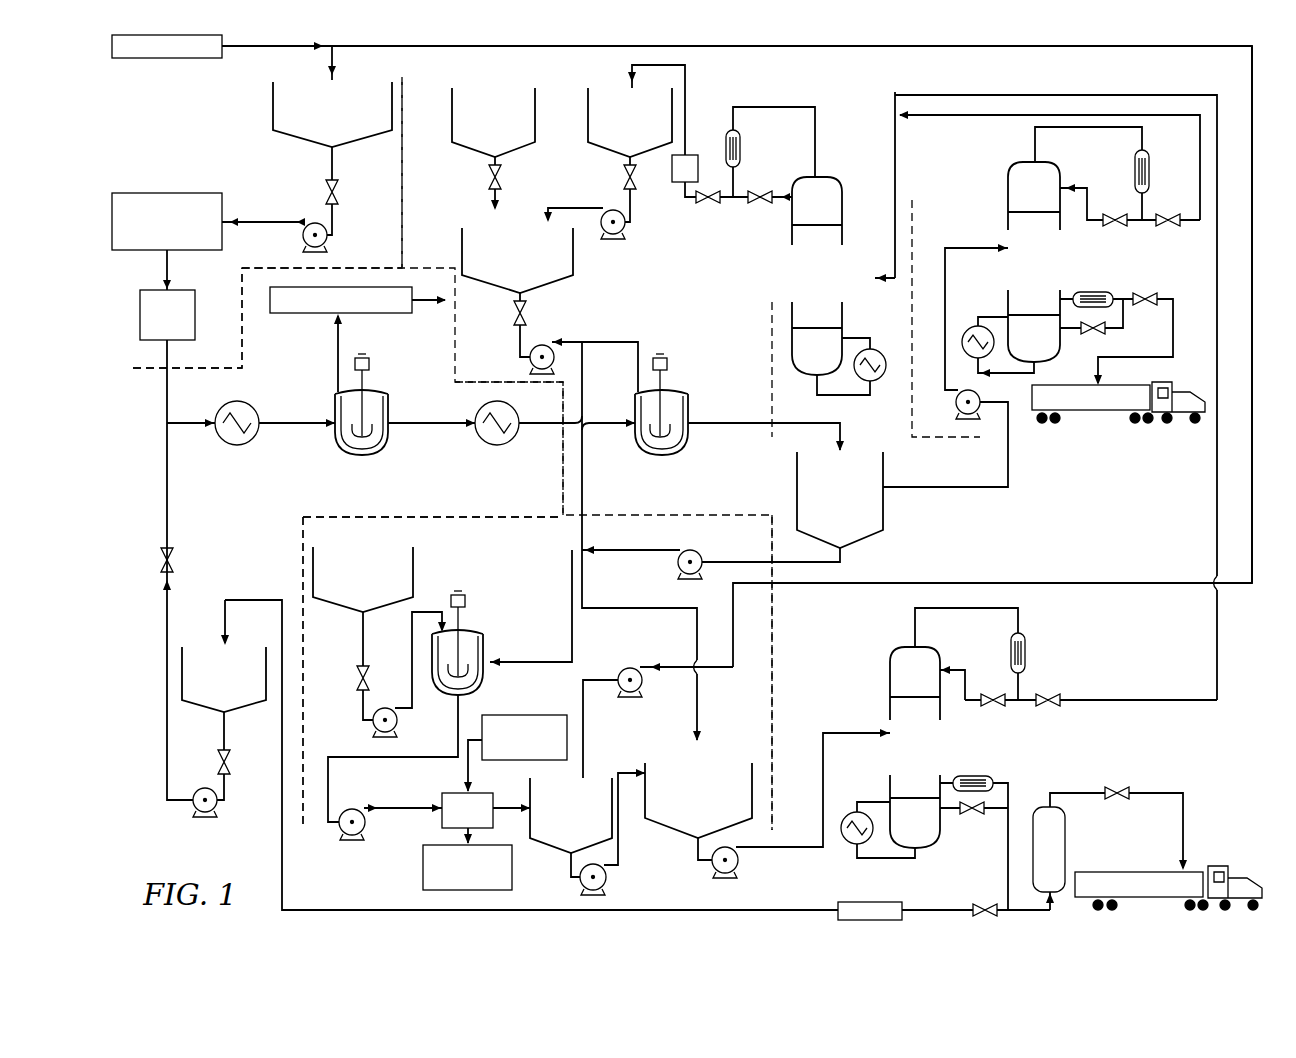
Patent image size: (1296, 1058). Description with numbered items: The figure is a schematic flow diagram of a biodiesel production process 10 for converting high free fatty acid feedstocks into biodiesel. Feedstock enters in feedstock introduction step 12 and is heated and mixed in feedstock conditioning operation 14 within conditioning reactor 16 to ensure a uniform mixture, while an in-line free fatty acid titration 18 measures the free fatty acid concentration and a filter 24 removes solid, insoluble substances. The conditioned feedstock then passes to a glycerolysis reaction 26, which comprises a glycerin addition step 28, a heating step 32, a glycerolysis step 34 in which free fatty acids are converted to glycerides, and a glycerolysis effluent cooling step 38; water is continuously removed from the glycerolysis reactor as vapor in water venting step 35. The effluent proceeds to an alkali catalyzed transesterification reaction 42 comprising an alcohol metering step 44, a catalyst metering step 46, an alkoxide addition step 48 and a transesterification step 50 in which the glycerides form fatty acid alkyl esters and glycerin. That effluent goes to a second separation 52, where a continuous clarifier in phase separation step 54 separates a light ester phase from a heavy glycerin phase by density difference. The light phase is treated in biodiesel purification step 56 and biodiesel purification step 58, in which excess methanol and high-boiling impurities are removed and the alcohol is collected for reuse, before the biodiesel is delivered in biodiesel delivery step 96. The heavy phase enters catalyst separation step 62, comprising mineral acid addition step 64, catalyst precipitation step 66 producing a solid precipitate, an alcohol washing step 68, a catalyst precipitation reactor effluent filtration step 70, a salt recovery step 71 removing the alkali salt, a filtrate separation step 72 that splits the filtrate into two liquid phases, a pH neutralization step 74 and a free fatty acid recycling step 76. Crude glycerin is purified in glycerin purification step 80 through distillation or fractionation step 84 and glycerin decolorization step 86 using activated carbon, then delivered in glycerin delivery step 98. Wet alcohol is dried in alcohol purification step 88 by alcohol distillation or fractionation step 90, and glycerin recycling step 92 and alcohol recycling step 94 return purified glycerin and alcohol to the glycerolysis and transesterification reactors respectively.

The biodiesel production process 10 is at (1232, 738).
The feedstock introduction step 12 is at (122, 60).
The feedstock conditioning operation 14 is at (216, 136).
The conditioning reactor 16 is at (292, 135).
The in-line free fatty acid titration 18 is at (172, 192).
The filter 24 is at (142, 292).
The glycerolysis reaction 26 is at (280, 502).
The glycerin addition step 28 is at (210, 715).
The heating step 32 is at (225, 405).
The glycerolysis step 34 is at (385, 398).
The water venting step 35 is at (362, 287).
The glycerolysis effluent cooling step 38 is at (492, 478).
The alkali catalyzed transesterification reaction 42 is at (678, 332).
The alcohol metering step 44 is at (606, 88).
The catalyst metering step 46 is at (488, 88).
The alkoxide addition step 48 is at (468, 225).
The transesterification step 50 is at (682, 398).
The second separation 52 is at (900, 512).
The phase separation step 54 is at (887, 468).
The biodiesel purification step 56 is at (967, 203).
The biodiesel purification step 58 is at (1008, 210).
The catalyst separation step 62 is at (585, 626).
The mineral acid addition step 64 is at (413, 567).
The catalyst precipitation step 66 is at (488, 678).
The alcohol washing step 68 is at (492, 715).
The catalyst precipitation reactor effluent filtration step 70 is at (440, 817).
The salt recovery step 71 is at (423, 876).
The filtrate separation step 72 is at (545, 850).
The pH neutralization step 74 is at (672, 835).
The free fatty acid recycling step 76 is at (618, 673).
The glycerin purification step 80 is at (868, 684).
The distillation or fractionation step 84 is at (955, 733).
The glycerin decolorization step 86 is at (1035, 805).
The alcohol purification step 88 is at (768, 250).
The alcohol distillation or fractionation step 90 is at (828, 177).
The glycerin recycling step 92 is at (905, 905).
The alcohol recycling step 94 is at (695, 155).
The biodiesel delivery step 96 is at (1103, 412).
The glycerin delivery step 98 is at (1210, 870).